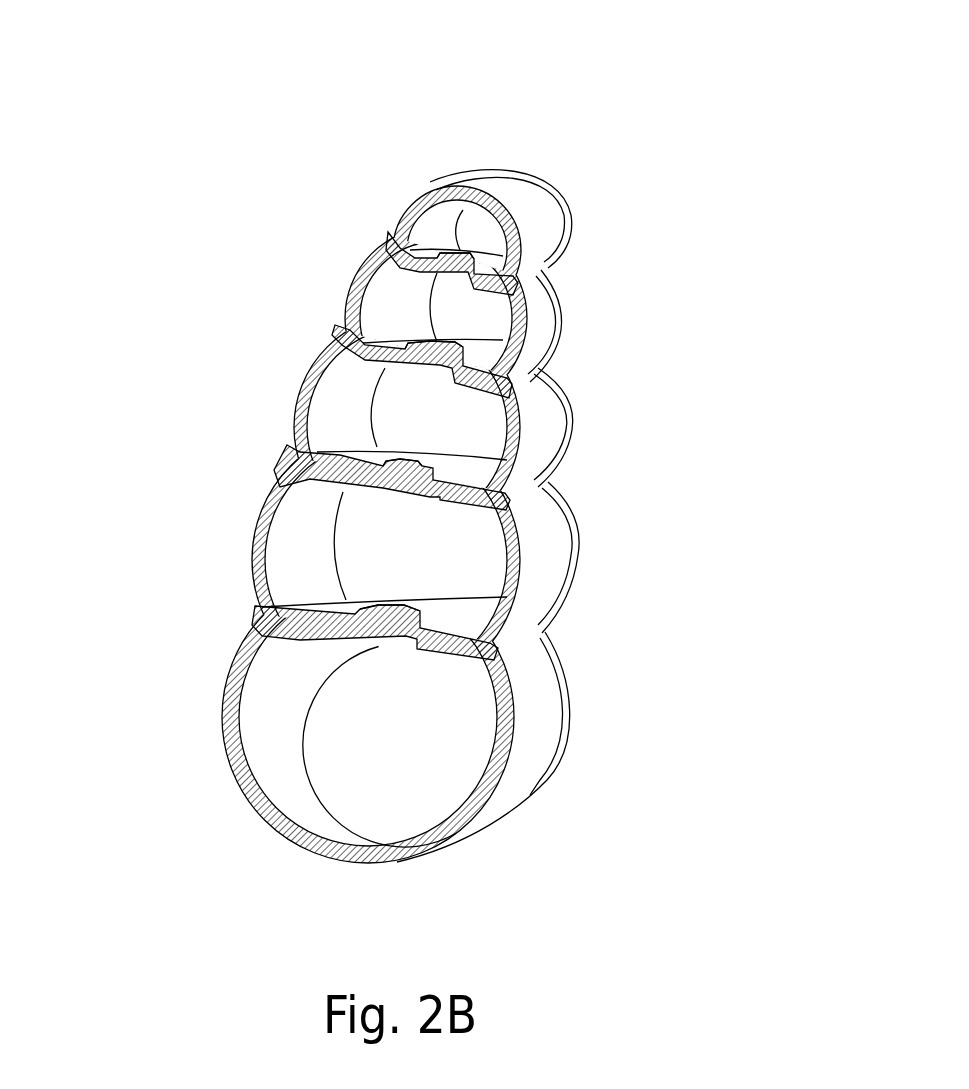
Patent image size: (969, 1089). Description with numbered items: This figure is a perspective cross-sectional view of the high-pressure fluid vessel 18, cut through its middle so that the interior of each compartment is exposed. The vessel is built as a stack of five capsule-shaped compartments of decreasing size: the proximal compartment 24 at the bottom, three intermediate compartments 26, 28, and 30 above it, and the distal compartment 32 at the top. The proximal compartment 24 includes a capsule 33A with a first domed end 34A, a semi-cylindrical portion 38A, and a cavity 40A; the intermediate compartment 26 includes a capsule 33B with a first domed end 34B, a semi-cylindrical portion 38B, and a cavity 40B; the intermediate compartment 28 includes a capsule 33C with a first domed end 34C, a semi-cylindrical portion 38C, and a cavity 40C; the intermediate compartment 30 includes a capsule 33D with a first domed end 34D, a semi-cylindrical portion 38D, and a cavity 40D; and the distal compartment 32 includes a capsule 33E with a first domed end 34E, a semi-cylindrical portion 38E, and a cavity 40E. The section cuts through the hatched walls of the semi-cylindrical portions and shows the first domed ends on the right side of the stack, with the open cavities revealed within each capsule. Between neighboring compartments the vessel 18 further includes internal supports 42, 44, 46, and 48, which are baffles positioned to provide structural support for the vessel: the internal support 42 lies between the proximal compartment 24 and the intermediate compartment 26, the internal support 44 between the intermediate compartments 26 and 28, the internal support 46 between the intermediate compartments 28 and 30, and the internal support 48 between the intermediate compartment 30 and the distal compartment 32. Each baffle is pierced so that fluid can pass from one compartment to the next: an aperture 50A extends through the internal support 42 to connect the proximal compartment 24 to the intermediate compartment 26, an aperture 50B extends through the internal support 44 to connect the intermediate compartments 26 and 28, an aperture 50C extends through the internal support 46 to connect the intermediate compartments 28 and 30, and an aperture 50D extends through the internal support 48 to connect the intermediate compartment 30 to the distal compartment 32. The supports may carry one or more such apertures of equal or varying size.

The high-pressure fluid vessel 18 is at (140, 116).
The proximal compartment 24 is at (592, 703).
The intermediate compartment 26 is at (593, 553).
The intermediate compartment 28 is at (584, 420).
The intermediate compartment 30 is at (578, 308).
The distal compartment 32 is at (578, 205).
The capsule 33A is at (531, 763).
The capsule 33B is at (540, 506).
The capsule 33C is at (558, 393).
The capsule 33D is at (556, 288).
The capsule 33E is at (540, 208).
The first domed end 34A is at (568, 733).
The first domed end 34B is at (572, 570).
The first domed end 34C is at (571, 437).
The first domed end 34D is at (563, 323).
The first domed end 34E is at (572, 226).
The semi-cylindrical portion 38A is at (473, 833).
The semi-cylindrical portion 38B is at (538, 592).
The semi-cylindrical portion 38C is at (541, 455).
The semi-cylindrical portion 38D is at (541, 340).
The semi-cylindrical portion 38E is at (542, 238).
The cavity 40A is at (385, 770).
The cavity 40B is at (377, 545).
The cavity 40C is at (408, 408).
The cavity 40D is at (462, 293).
The cavity 40E is at (487, 232).
The internal support 42 is at (272, 638).
The internal support 44 is at (350, 483).
The internal support 46 is at (398, 375).
The internal support 48 is at (410, 253).
The aperture 50A is at (380, 615).
The aperture 50B is at (398, 459).
The aperture 50C is at (457, 360).
The aperture 50D is at (462, 258).